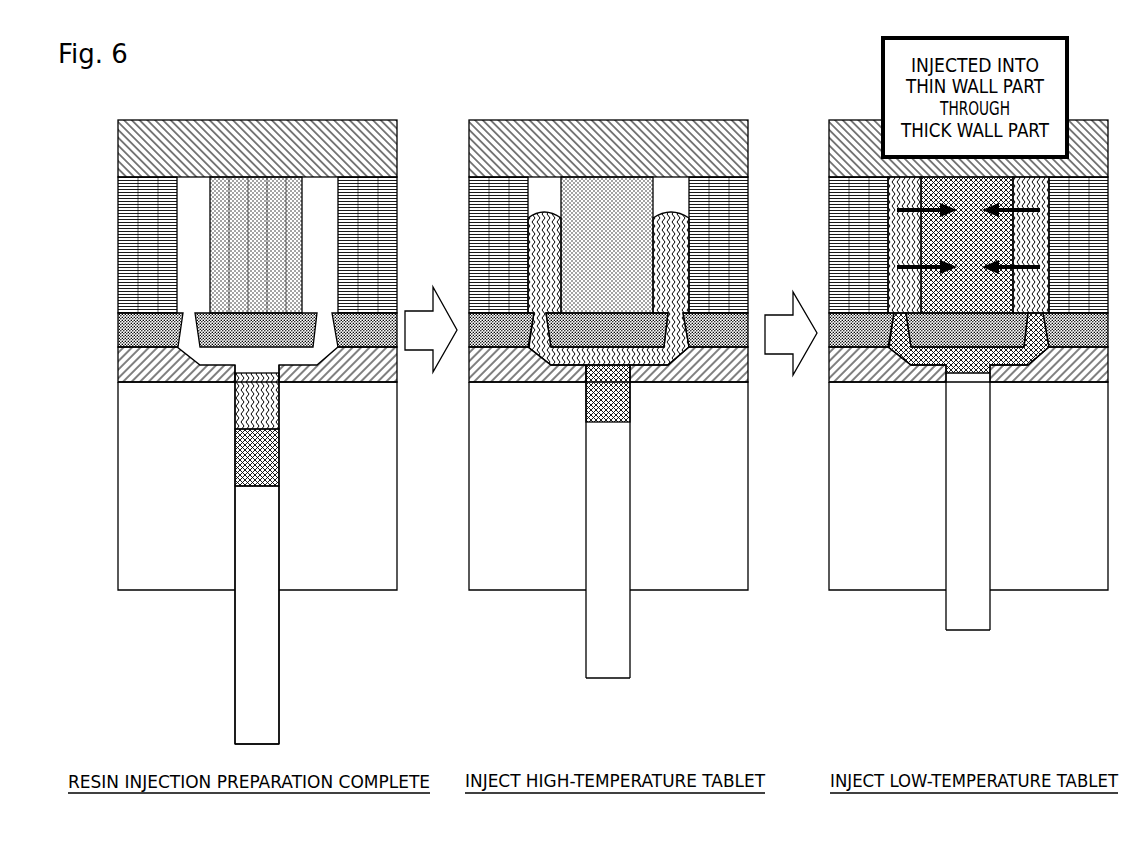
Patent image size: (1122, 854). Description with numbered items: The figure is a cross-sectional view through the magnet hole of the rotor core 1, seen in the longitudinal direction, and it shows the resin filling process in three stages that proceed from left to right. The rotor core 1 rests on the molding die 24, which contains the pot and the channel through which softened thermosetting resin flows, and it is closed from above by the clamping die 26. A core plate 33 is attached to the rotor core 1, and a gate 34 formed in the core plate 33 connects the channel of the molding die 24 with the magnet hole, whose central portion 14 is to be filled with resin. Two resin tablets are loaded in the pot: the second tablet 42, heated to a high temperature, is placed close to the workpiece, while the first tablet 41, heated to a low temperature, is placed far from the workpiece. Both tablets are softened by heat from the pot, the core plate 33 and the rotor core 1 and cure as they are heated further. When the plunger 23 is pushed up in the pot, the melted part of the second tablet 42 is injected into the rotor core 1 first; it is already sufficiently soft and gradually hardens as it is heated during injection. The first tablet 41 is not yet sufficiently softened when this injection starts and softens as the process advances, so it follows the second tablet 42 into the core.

The rotor core 1 is at (118, 227).
The thick wall part 14 is at (222, 212).
The clamping die 26 is at (278, 120).
The core plate 33 is at (118, 332).
The molding die 24 is at (118, 361).
The gate 34 is at (192, 340).
The second tablet 42 is at (243, 413).
The first tablet 41 is at (242, 472).
The plunger 23 is at (235, 664).